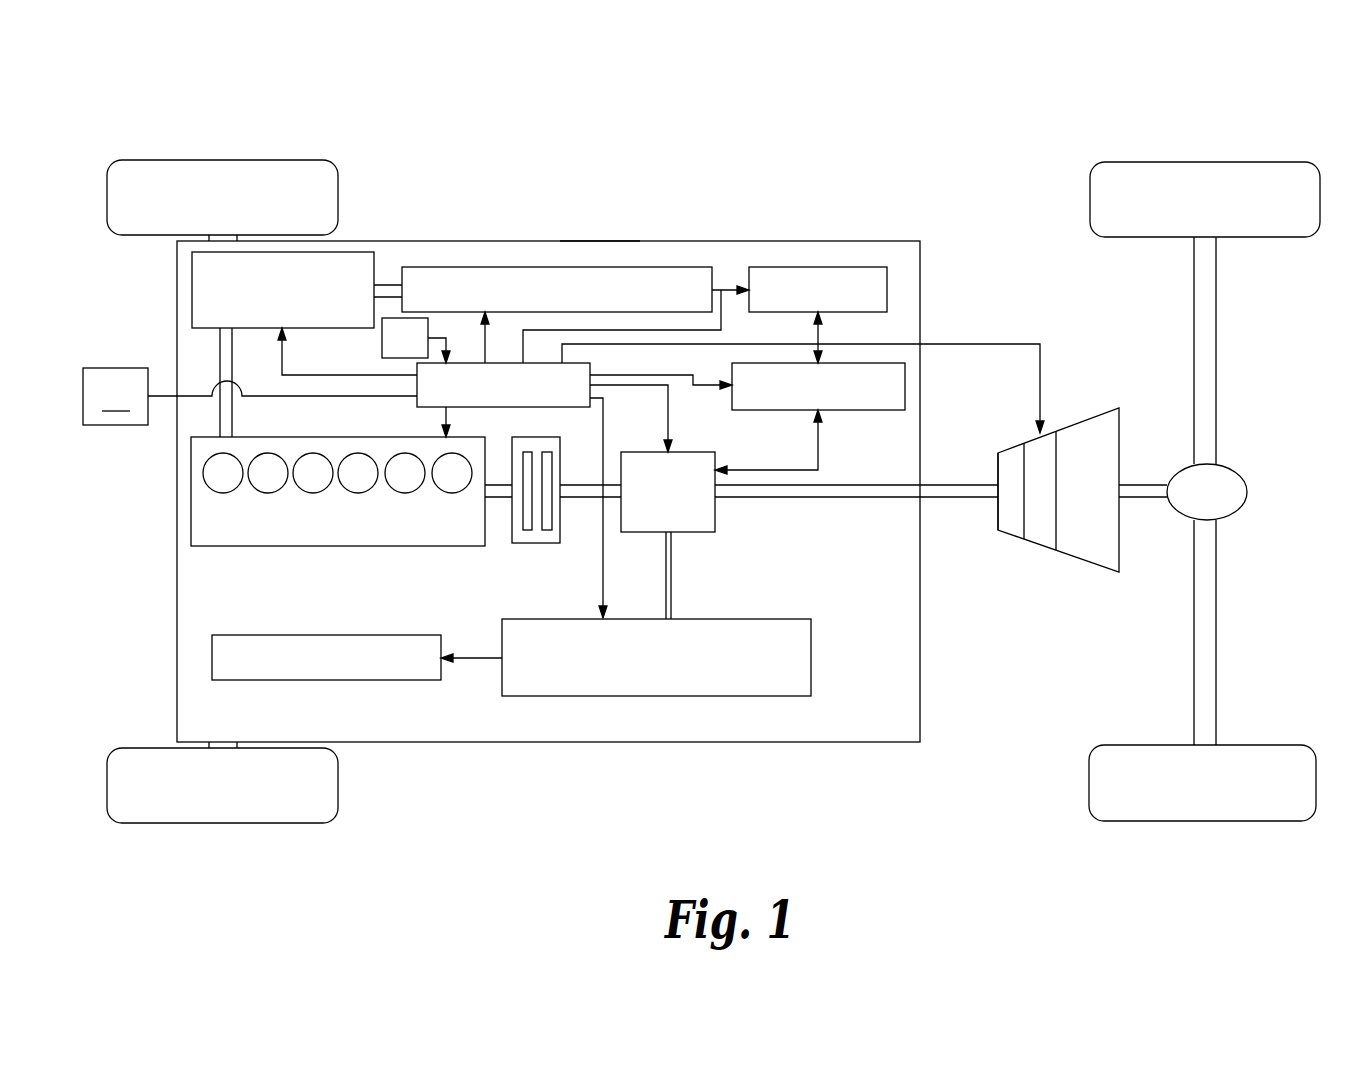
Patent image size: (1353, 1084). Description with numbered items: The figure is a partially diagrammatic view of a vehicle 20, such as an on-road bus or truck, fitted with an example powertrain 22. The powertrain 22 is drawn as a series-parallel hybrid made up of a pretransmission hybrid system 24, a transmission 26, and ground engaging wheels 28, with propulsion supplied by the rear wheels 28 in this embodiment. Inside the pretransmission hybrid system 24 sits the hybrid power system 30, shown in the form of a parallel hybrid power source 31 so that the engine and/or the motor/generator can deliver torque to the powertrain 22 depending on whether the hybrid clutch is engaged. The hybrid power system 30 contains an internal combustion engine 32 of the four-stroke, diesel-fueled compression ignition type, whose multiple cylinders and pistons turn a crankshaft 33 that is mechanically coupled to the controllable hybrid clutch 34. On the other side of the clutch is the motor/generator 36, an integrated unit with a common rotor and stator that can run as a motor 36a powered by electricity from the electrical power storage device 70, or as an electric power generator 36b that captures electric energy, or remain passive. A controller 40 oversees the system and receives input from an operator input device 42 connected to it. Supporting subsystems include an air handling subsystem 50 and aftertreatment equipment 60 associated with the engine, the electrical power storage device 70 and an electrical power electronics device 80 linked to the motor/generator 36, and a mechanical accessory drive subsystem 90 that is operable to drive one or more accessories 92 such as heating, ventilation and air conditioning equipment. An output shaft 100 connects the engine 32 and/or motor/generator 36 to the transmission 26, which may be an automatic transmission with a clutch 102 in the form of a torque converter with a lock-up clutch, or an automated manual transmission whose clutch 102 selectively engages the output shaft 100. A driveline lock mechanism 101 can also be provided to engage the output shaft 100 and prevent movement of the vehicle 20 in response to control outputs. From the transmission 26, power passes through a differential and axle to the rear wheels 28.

The vehicle 20 is at (852, 111).
The powertrain 22 is at (982, 316).
The pretransmission hybrid system 24 is at (562, 755).
The transmission 26 is at (1067, 561).
The ground engaging wheels 28 is at (197, 160).
The hybrid power system 30 is at (595, 241).
The parallel hybrid power source 31 is at (789, 573).
The internal combustion engine 32 is at (368, 546).
The crankshaft 33 is at (498, 497).
The hybrid clutch 34 is at (545, 543).
The motor/generator 36 is at (715, 515).
The motor 36a is at (690, 452).
The electric power generator 36b is at (633, 532).
The controller 40 is at (417, 405).
The operator input device 42 is at (250, 396).
The air handling subsystem 50 is at (192, 283).
The aftertreatment equipment 60 is at (450, 267).
The electrical power storage device 70 is at (815, 267).
The electrical power electronics device 80 is at (885, 410).
The mechanical accessory drive subsystem 90 is at (736, 618).
The accessories 92 is at (262, 635).
The output shaft 100 is at (945, 497).
The driveline lock mechanism 101 is at (1007, 535).
The clutch 102 is at (1035, 437).